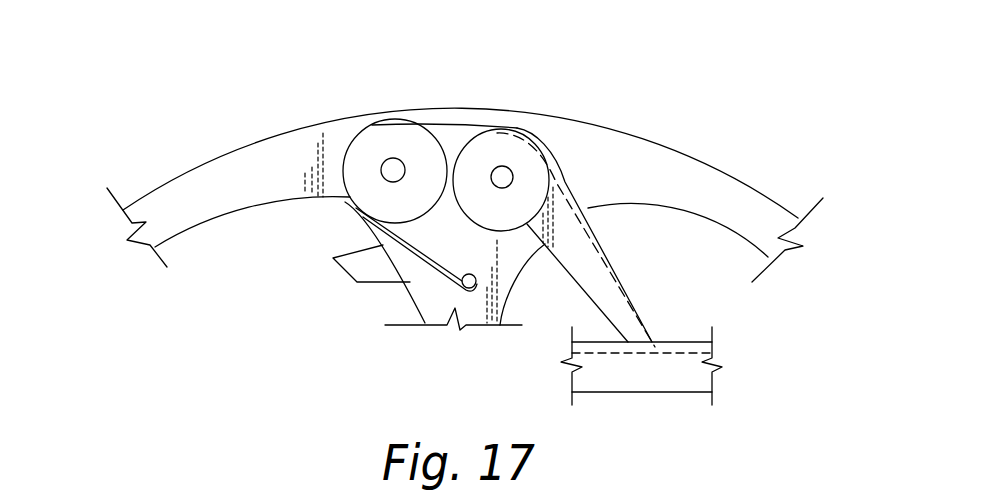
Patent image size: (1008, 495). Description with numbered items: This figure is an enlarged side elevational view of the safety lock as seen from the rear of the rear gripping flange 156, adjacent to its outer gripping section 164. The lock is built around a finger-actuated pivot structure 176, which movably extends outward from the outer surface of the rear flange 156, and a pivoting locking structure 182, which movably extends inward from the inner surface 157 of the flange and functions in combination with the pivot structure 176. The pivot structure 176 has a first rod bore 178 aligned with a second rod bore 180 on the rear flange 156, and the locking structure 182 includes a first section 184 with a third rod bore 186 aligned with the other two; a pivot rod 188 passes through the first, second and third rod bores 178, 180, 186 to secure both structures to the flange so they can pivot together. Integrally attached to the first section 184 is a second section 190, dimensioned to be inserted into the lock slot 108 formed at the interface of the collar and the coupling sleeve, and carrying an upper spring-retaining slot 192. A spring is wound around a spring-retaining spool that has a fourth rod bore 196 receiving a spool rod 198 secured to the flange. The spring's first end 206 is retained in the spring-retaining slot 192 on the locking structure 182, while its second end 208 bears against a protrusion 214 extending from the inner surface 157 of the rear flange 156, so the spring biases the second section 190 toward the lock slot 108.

The rear flange 156 is at (436, 164).
The outer gripping section 164 is at (200, 187).
The fourth rod bore 196 is at (341, 135).
The spool rod 198 is at (388, 160).
The first end 206 is at (438, 128).
The pivot rod 188 is at (658, 137).
The first section 184 is at (507, 170).
The first rod bore 178 is at (658, 137).
The second rod bore 180 is at (658, 137).
The third rod bore 186 is at (658, 137).
The upper spring-retaining slot 192 is at (566, 183).
The pivoting locking structure 182 is at (517, 350).
The second section 190 is at (638, 328).
The lock slot 108 is at (666, 346).
The inner surface 157 is at (434, 313).
The finger-actuated pivot structure 176 is at (345, 270).
The second end 208 is at (378, 225).
The protrusion 214 is at (455, 288).